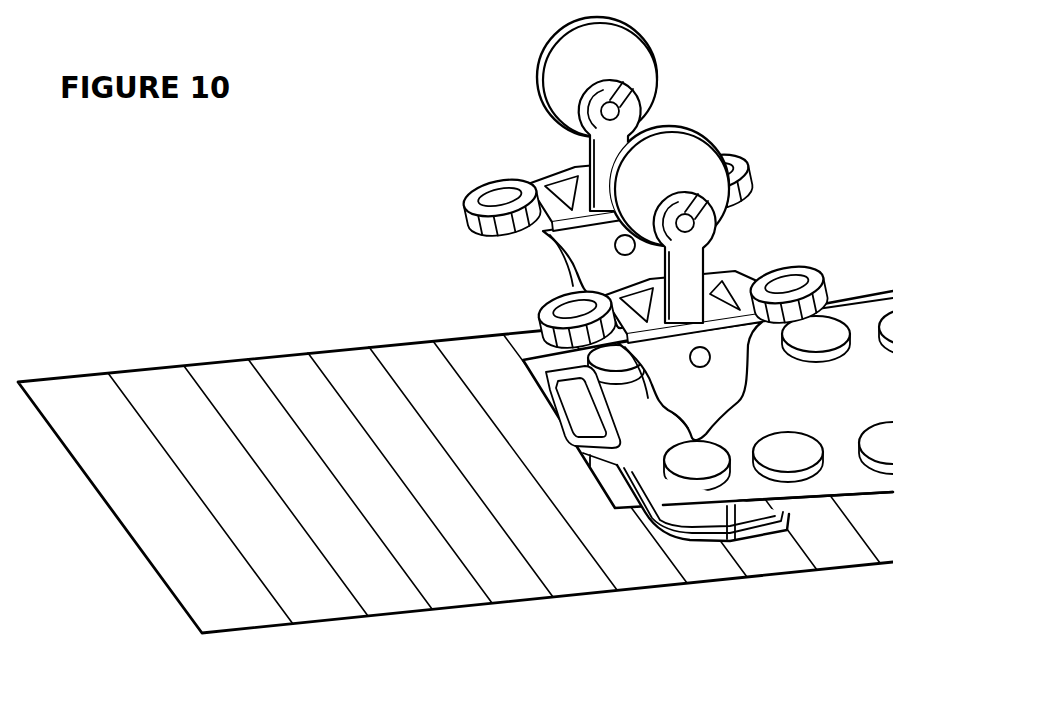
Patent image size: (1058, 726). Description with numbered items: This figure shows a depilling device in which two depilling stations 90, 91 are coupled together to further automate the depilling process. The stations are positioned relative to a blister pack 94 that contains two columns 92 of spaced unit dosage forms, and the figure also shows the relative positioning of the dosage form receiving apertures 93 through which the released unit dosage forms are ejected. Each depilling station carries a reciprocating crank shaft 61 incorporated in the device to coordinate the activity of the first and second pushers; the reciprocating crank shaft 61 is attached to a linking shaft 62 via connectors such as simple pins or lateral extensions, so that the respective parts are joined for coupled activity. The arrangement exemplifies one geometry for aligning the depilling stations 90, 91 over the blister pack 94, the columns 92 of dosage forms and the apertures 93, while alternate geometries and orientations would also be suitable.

The reciprocating crank shaft 61 is at (633, 131).
The linking shaft 62 is at (685, 257).
The depilling station 90 is at (704, 338).
The depilling station 91 is at (736, 399).
The columns of spaced unit dosage forms 92 is at (697, 466).
The dosage form receiving apertures 93 is at (730, 512).
The blister pack 94 is at (455, 481).